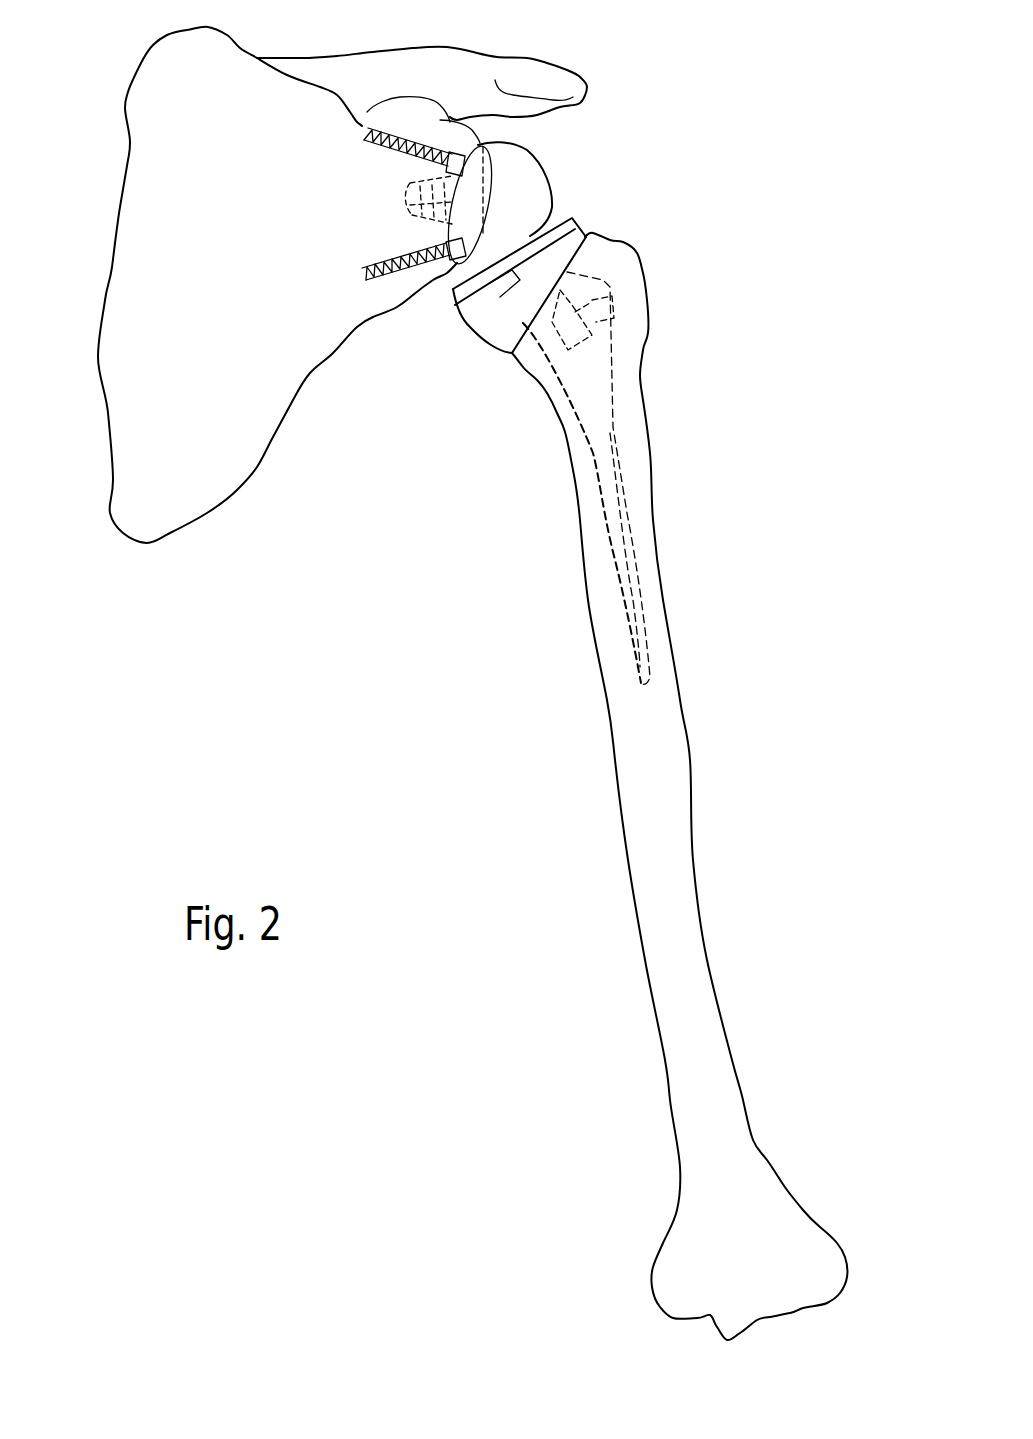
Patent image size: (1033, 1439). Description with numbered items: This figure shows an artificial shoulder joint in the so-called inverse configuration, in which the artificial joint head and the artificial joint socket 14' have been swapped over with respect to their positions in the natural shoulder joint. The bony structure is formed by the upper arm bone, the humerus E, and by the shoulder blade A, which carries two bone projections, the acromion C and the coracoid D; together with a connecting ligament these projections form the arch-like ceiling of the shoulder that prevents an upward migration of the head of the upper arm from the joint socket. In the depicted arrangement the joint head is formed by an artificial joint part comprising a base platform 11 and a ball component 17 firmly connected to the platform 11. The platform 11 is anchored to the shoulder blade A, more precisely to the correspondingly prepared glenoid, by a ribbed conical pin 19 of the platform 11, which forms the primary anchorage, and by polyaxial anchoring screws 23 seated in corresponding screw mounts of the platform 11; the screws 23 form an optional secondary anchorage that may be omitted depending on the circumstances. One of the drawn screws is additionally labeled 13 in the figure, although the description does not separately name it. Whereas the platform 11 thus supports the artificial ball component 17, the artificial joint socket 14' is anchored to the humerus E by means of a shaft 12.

The base platform 11 is at (422, 168).
The inferior glenoid screw 13 is at (418, 233).
The conical pin 19 is at (410, 207).
The polyaxial anchoring screws 23 is at (397, 127).
The ball component 17 is at (520, 183).
The artificial joint socket 14' is at (508, 313).
The shaft 12 is at (617, 538).
The shoulder blade A is at (132, 387).
The acromion C is at (540, 80).
The coracoid D is at (442, 132).
The humerus E is at (667, 727).